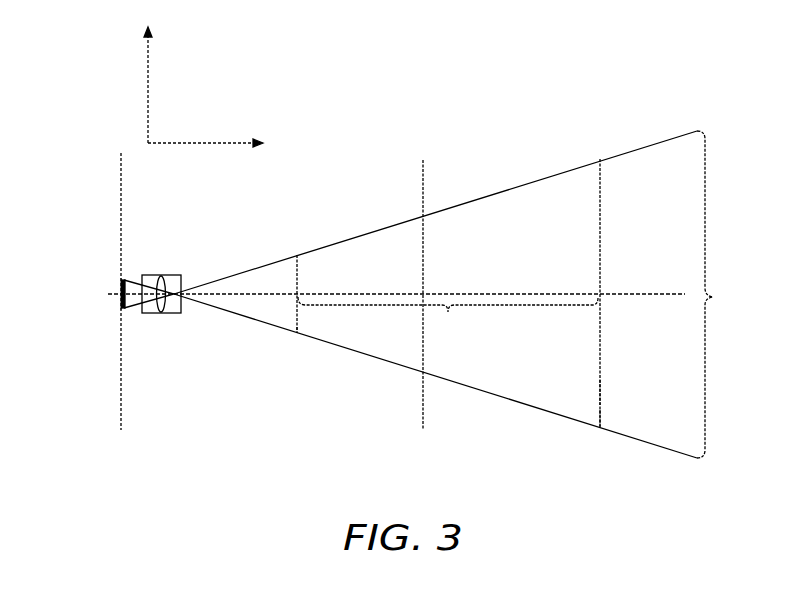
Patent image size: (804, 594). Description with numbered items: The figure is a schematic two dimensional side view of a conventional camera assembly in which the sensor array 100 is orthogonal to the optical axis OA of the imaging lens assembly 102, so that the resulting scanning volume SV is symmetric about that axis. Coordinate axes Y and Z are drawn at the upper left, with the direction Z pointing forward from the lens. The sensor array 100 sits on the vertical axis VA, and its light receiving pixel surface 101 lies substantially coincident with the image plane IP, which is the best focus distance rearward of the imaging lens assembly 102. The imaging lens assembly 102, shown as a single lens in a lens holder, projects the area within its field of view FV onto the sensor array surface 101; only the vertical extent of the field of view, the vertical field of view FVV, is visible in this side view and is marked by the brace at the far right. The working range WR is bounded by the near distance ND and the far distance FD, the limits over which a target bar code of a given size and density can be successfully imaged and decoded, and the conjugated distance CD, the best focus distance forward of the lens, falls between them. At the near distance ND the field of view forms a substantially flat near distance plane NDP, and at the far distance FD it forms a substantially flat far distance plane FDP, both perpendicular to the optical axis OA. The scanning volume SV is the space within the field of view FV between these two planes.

The sensor array 100 is at (119, 296).
The sensor array light receiving pixel surface 101 is at (125, 304).
The imaging lens assembly 102 is at (176, 276).
The vertical axis VA is at (119, 222).
The image plane IP is at (124, 284).
The optical axis OA is at (685, 300).
The scanning volume SV is at (518, 380).
The near distance ND is at (296, 258).
The near distance plane NDP is at (296, 331).
The conjugated distance CD is at (421, 168).
The working range WR is at (448, 321).
The far distance FD is at (601, 292).
The far distance plane FDP is at (598, 418).
The field of view FV is at (604, 393).
The vertical field of view FVV is at (724, 294).
The Y axis Y is at (147, 75).
The direction z Z is at (212, 144).